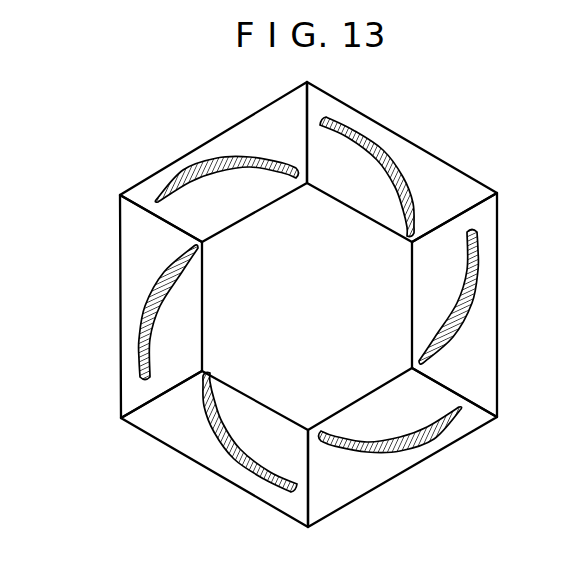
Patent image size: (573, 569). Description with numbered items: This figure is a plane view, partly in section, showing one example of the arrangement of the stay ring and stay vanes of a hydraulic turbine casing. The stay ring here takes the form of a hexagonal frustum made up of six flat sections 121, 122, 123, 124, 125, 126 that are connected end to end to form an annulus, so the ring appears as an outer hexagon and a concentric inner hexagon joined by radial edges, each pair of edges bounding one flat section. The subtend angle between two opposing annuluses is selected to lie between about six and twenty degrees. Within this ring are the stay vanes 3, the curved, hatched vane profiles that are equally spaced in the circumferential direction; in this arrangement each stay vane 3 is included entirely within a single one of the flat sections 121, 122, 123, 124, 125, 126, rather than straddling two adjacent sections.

The stay vane 3 is at (468, 274).
The flat section 121 is at (433, 160).
The flat section 122 is at (493, 357).
The flat section 123 is at (362, 491).
The flat section 124 is at (165, 434).
The flat section 125 is at (121, 233).
The flat section 126 is at (220, 136).